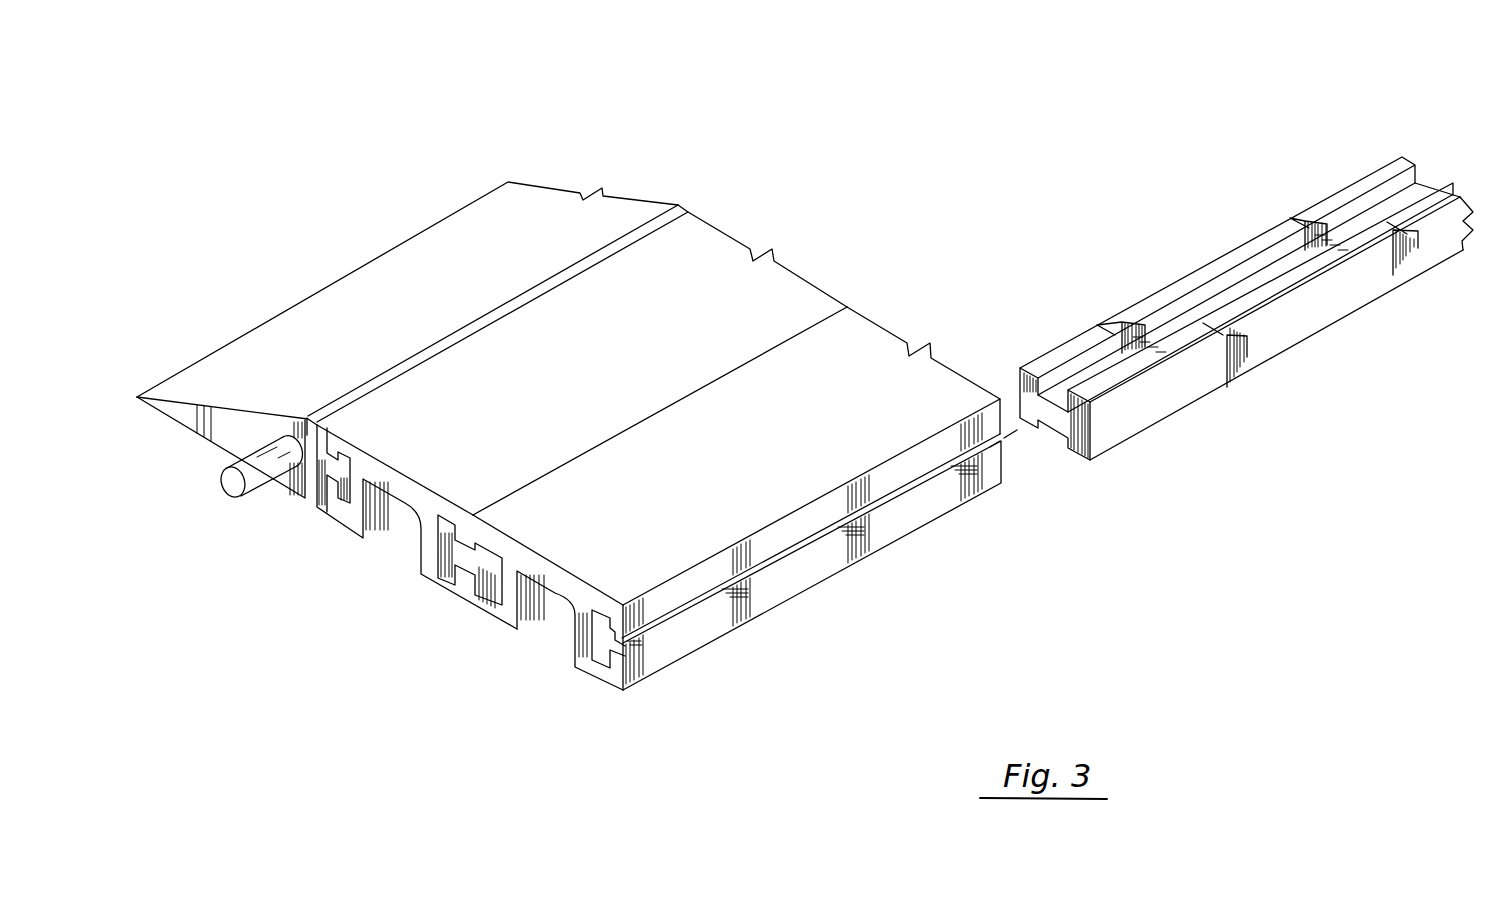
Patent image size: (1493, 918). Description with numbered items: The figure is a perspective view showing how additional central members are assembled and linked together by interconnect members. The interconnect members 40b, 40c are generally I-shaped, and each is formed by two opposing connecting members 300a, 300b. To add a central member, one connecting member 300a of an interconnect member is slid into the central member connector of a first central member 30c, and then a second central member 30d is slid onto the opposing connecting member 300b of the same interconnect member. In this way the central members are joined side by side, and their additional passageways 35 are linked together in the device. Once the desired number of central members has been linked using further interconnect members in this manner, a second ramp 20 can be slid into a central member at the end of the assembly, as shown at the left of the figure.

The second ramp 20 is at (523, 228).
The central member 30c is at (705, 297).
The second central member 30d is at (853, 383).
The passageway 35 is at (392, 547).
The interconnect member 40b is at (470, 557).
The interconnect member 40c is at (1246, 288).
The connecting member 300a is at (1279, 229).
The opposing connecting member 300b is at (1438, 202).